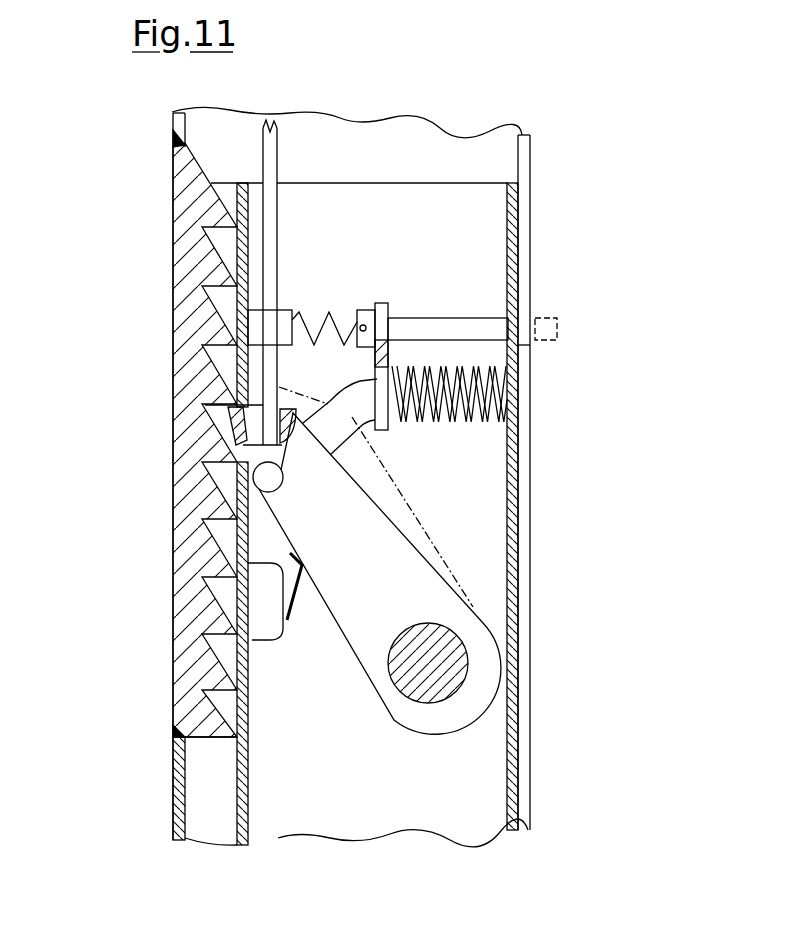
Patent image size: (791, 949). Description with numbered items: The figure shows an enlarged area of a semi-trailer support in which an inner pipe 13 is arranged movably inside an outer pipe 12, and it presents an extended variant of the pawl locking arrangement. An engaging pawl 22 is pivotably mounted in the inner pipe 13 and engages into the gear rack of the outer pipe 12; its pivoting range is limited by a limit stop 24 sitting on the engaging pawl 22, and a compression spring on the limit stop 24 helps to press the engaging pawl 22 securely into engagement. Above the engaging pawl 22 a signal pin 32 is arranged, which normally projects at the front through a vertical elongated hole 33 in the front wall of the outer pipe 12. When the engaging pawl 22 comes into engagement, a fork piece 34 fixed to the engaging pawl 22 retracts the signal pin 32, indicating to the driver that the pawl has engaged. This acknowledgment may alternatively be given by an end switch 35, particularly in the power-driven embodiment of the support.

The outer pipe 12 is at (532, 372).
The inner pipe 13 is at (527, 416).
The engaging pawl 22 is at (375, 553).
The limit stop 24 is at (405, 477).
The signal pin 32 is at (475, 333).
The vertical elongated hole 33 is at (528, 350).
The fork piece 34 is at (388, 310).
The end switch 35 is at (266, 600).